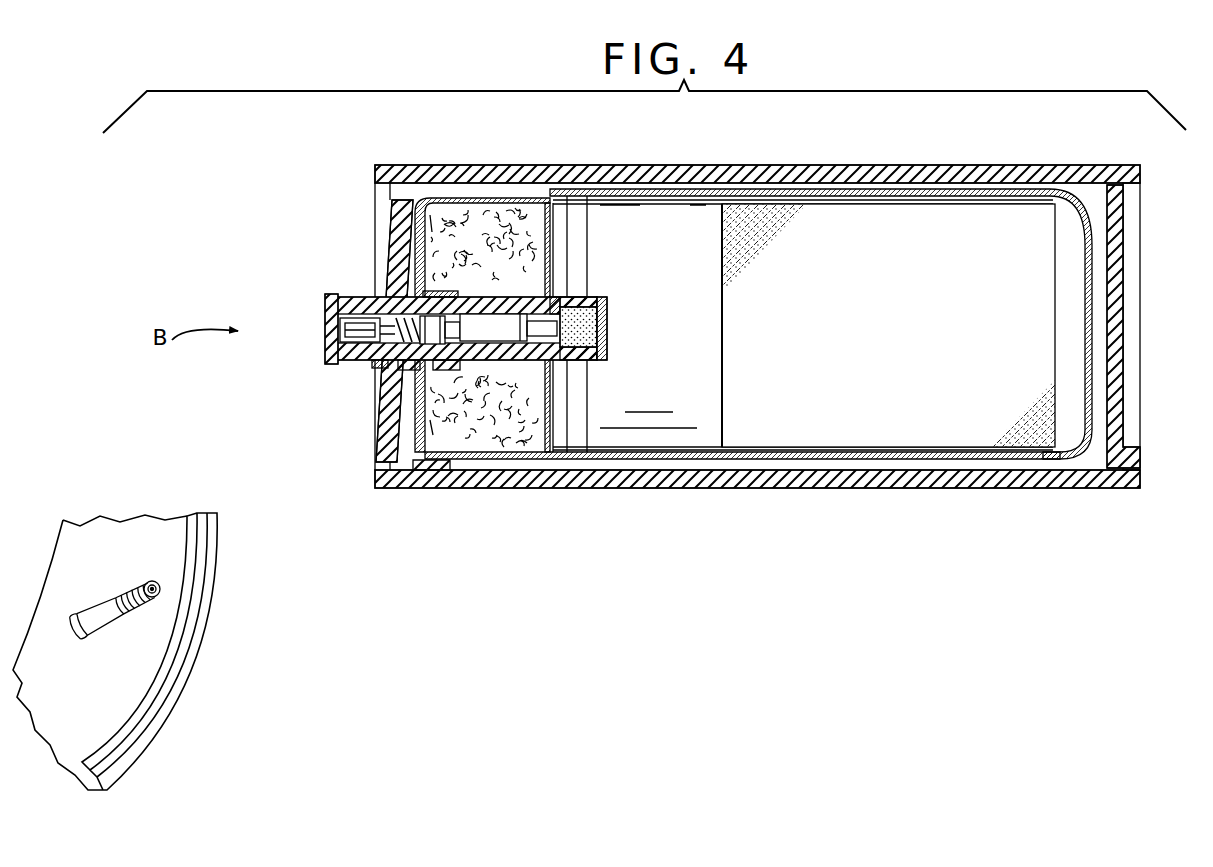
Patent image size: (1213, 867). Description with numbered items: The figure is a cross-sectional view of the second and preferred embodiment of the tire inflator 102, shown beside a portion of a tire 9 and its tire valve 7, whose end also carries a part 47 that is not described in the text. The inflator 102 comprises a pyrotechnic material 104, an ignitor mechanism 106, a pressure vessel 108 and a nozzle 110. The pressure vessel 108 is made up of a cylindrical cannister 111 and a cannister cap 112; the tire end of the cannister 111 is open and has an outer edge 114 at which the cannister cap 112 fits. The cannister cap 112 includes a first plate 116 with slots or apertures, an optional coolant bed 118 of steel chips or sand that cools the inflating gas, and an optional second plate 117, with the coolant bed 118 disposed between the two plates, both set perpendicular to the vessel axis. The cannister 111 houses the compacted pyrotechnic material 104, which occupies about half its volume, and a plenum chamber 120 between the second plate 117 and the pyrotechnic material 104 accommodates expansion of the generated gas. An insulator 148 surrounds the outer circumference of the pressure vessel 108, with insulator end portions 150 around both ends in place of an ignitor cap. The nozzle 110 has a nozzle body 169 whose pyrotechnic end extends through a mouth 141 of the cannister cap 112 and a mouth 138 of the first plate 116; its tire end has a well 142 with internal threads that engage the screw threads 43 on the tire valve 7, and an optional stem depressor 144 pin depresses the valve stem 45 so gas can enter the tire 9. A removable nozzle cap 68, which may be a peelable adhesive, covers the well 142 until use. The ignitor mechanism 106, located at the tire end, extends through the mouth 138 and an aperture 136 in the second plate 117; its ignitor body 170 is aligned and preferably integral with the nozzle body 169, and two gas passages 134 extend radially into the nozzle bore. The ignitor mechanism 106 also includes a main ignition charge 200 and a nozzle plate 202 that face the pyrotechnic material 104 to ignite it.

The insulator 148 is at (386, 175).
The pressure vessel 108 is at (927, 140).
The insulator end portion 150 is at (382, 225).
The cannister cap 112 is at (490, 197).
The cannister 111 is at (1070, 190).
The outer edge 114 is at (440, 475).
The second plate 117 is at (545, 212).
The plenum chamber 120 is at (640, 364).
The tire inflator 102 is at (716, 556).
The pyrotechnic material 104 is at (852, 329).
The coolant bed 118 is at (480, 444).
The first plate 116 is at (455, 212).
The nozzle 110 is at (310, 385).
The nozzle body 169 is at (370, 297).
The mouth 141 is at (378, 368).
The mouth 138 is at (410, 370).
The nozzle cap 68 is at (330, 346).
The well 142 is at (330, 320).
The stem depressor 144 is at (330, 330).
The gas passages 134 is at (445, 372).
The ignitor body 170 is at (503, 349).
The aperture 136 is at (556, 298).
The ignitor mechanism 106 is at (610, 288).
The main ignition charge 200 is at (592, 358).
The nozzle plate 202 is at (610, 320).
The tire 9 is at (175, 676).
The tire valve 7 is at (80, 627).
The screw threads 43 is at (140, 606).
The valve stem 45 is at (165, 590).
The valve core 47 is at (150, 585).